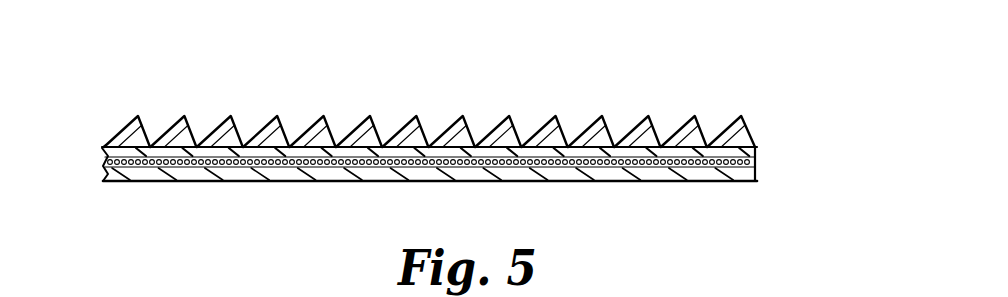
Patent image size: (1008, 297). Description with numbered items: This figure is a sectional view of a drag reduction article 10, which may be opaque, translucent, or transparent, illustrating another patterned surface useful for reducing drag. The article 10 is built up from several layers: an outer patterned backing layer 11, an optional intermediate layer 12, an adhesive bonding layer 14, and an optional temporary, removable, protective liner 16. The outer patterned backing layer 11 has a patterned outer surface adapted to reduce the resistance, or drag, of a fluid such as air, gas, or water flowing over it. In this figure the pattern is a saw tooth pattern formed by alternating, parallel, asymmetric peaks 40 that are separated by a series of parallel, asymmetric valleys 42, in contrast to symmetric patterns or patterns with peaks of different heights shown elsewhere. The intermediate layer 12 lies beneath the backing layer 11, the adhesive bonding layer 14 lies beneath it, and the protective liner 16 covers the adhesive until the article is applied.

The drag reduction article 10 is at (464, 121).
The outer patterned backing layer 11 is at (751, 128).
The intermediate layer 12 is at (757, 150).
The adhesive bonding layer 14 is at (102, 158).
The protective liner 16 is at (548, 178).
The asymmetric peaks 40 is at (416, 117).
The asymmetric valleys 42 is at (524, 140).